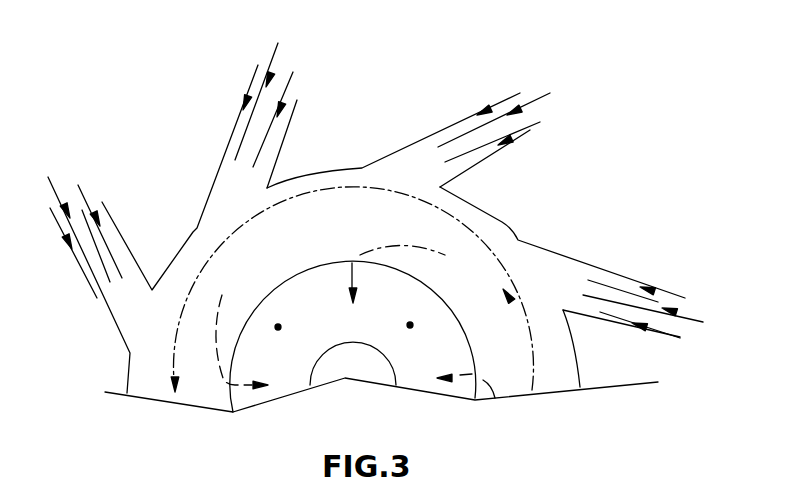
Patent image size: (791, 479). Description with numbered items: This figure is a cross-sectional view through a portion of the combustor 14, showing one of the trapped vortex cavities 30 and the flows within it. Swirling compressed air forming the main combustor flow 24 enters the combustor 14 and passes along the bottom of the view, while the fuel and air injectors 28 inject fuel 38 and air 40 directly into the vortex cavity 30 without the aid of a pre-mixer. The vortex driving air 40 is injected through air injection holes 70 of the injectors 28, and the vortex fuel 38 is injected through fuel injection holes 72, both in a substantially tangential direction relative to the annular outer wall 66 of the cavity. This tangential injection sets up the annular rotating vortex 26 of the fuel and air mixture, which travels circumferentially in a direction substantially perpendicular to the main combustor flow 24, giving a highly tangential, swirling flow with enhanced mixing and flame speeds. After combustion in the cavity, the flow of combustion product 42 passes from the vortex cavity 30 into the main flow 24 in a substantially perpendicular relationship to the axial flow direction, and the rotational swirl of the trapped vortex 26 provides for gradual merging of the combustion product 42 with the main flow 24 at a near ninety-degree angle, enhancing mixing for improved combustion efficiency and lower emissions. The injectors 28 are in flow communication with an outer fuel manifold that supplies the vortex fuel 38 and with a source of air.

The combustor 14 is at (452, 305).
The main combustor flow 24 is at (278, 327).
The annular rotating vortex 26 is at (202, 293).
The fuel and air injectors 28 is at (395, 152).
The vortex cavities 30 is at (502, 222).
The fuel 38 is at (537, 93).
The air 40 is at (498, 105).
The flow of combustion product 42 is at (380, 245).
The annular outer wall 66 is at (185, 248).
The air injection holes 70 is at (232, 137).
The fuel injection holes 72 is at (105, 265).